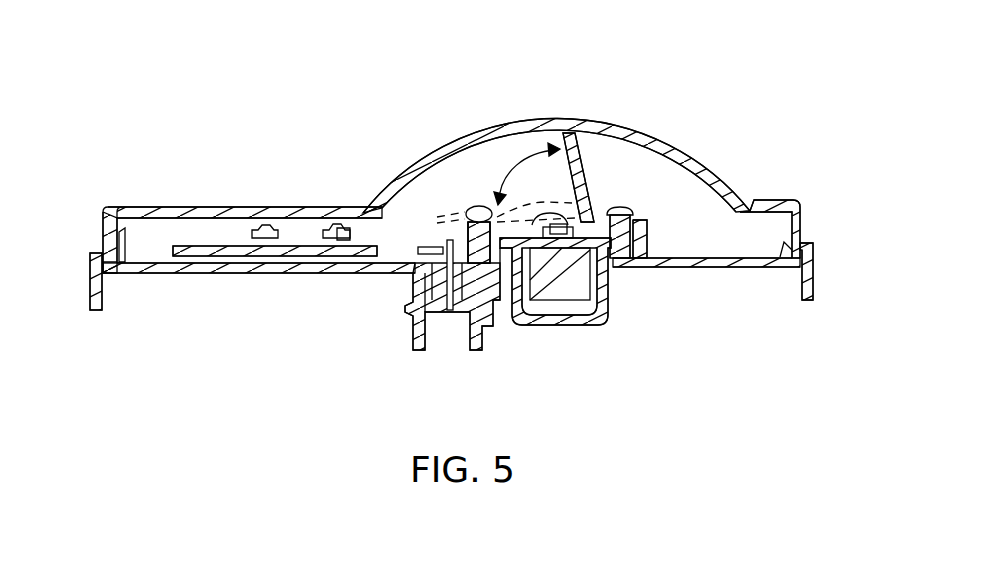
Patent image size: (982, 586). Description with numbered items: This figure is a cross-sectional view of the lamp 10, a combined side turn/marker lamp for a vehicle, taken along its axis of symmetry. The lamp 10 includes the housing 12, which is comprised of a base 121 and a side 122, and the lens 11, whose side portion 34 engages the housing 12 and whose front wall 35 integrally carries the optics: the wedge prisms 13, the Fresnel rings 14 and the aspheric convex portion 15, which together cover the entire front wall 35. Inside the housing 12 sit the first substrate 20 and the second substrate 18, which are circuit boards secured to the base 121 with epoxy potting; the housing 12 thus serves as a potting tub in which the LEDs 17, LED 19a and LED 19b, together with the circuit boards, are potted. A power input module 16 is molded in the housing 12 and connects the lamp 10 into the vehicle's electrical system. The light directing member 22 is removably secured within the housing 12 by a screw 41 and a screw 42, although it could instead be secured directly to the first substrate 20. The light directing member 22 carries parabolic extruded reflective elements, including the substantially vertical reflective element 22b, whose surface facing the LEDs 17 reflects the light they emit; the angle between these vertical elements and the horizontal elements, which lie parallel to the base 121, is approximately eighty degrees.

The lamp 10 is at (445, 212).
The lens 11 is at (801, 249).
The housing 12 is at (655, 268).
The wedge prisms 13 is at (138, 228).
The Fresnel rings 14 is at (346, 213).
The aspheric convex portion 15 is at (585, 121).
The power input module 16 is at (416, 322).
The LEDs 17 is at (556, 323).
The second substrate 18 is at (226, 257).
The LED 19a is at (343, 227).
The LED 19b is at (256, 231).
The first substrate 20 is at (533, 222).
The light directing member 22 is at (593, 141).
The reflective element 22b is at (578, 162).
The side portion 34 is at (92, 274).
The front wall 35 is at (273, 207).
The screw 41 is at (478, 207).
The screw 42 is at (622, 207).
The base 121 is at (727, 268).
The side 122 is at (117, 238).